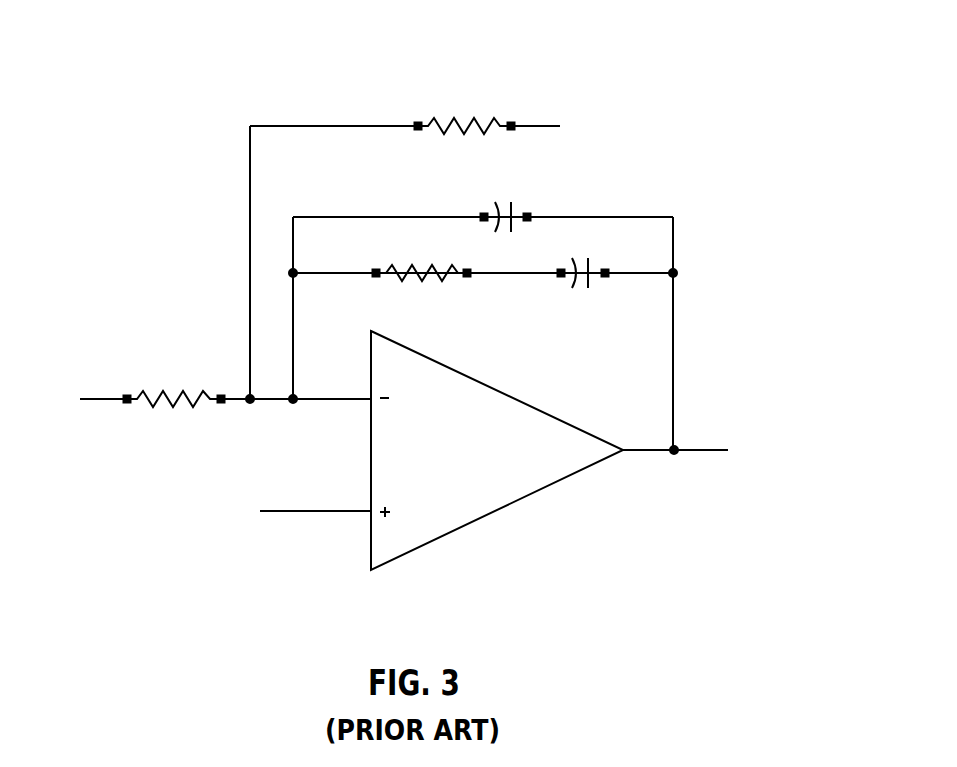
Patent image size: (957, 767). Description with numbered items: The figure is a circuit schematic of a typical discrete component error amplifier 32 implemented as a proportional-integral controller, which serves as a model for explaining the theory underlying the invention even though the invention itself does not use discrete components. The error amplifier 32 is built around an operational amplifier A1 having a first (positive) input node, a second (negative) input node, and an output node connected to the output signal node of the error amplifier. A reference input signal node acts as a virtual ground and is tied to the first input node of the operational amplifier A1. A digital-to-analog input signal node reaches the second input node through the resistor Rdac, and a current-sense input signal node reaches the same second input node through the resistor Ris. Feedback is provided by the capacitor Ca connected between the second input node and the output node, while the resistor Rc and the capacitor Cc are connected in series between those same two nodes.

The error amplifier 32 is at (215, 73).
The resistor Rdac is at (174, 382).
The resistor Ris is at (465, 111).
The capacitor Ca is at (506, 201).
The resistor Rc is at (422, 254).
The capacitor Cc is at (583, 259).
The operational amplifier A1 is at (497, 450).